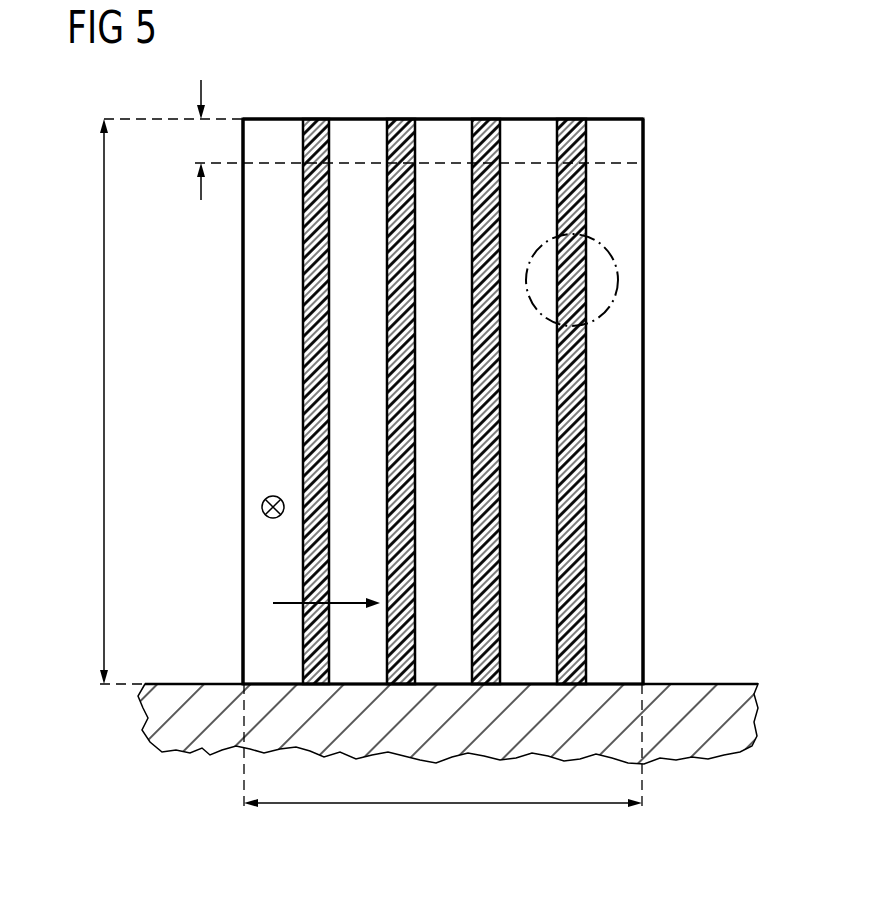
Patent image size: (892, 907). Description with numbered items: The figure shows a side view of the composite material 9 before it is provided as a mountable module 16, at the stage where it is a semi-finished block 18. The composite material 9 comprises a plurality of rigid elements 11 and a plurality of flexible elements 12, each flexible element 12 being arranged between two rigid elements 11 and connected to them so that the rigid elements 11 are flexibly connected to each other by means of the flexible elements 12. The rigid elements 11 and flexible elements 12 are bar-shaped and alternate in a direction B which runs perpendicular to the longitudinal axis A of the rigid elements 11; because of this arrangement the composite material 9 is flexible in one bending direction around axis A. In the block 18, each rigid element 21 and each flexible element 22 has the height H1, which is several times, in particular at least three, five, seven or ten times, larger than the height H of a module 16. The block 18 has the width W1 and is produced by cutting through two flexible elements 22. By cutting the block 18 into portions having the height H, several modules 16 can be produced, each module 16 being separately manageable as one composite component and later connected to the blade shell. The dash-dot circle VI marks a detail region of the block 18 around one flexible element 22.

The composite material 9 is at (755, 247).
The rigid element 11 is at (275, 130).
The flexible element 12 is at (495, 369).
The module 16 is at (657, 147).
The semi-finished block 18 is at (657, 435).
The rigid element 21 is at (630, 516).
The flexible element 22 is at (572, 613).
The longitudinal axis A is at (273, 495).
The direction B is at (340, 600).
The detail VI is at (618, 272).
The height H is at (173, 140).
The height H1 is at (155, 401).
The width W1 is at (443, 747).